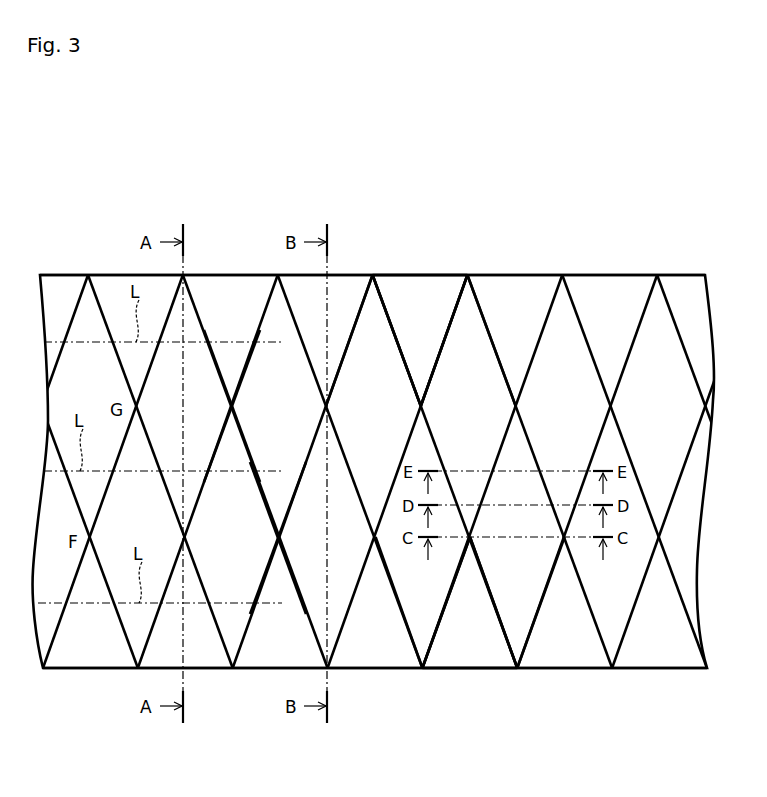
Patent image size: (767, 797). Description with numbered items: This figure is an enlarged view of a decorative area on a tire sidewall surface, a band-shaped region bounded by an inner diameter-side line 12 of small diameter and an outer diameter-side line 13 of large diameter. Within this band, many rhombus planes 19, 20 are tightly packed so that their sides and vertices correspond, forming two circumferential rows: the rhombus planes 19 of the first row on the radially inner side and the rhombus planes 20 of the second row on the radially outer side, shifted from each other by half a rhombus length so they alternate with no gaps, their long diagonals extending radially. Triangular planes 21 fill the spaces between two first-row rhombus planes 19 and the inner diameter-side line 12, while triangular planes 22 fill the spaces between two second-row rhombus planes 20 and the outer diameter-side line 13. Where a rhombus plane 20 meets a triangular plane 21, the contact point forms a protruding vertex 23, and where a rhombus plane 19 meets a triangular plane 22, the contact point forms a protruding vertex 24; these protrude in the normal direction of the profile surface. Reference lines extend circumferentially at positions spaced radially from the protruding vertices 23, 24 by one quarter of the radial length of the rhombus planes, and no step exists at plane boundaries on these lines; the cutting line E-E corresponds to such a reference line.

The inner diameter-side line 12 is at (597, 668).
The outer diameter-side line 13 is at (582, 275).
The rhombus plane 19 is at (420, 635).
The rhombus plane 20 is at (375, 322).
The triangular plane 21 is at (485, 648).
The triangular plane 22 is at (422, 293).
The protruding vertex 23 is at (276, 537).
The protruding vertex 24 is at (234, 406).